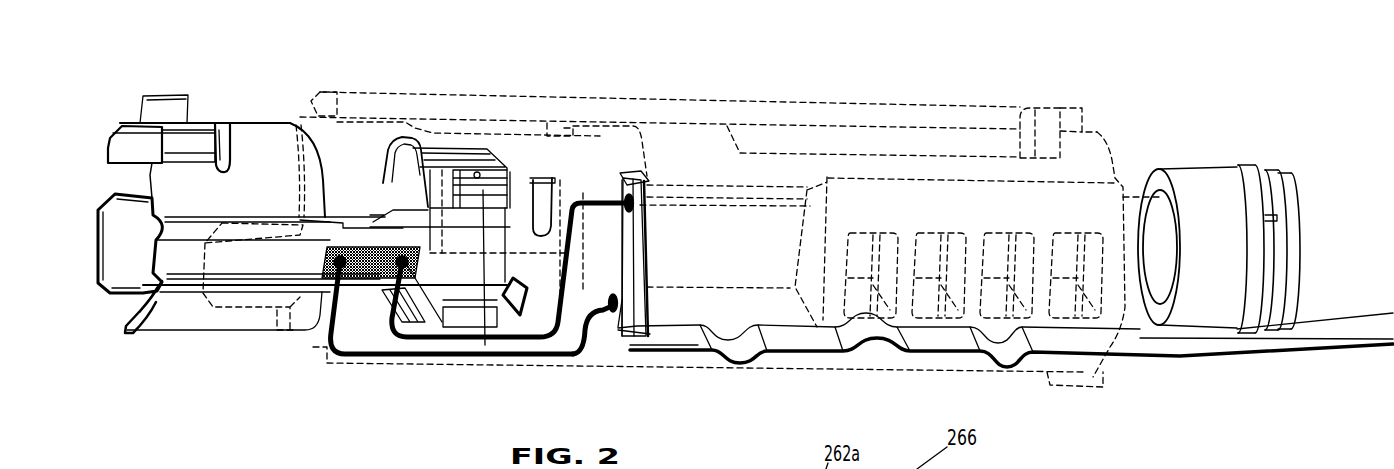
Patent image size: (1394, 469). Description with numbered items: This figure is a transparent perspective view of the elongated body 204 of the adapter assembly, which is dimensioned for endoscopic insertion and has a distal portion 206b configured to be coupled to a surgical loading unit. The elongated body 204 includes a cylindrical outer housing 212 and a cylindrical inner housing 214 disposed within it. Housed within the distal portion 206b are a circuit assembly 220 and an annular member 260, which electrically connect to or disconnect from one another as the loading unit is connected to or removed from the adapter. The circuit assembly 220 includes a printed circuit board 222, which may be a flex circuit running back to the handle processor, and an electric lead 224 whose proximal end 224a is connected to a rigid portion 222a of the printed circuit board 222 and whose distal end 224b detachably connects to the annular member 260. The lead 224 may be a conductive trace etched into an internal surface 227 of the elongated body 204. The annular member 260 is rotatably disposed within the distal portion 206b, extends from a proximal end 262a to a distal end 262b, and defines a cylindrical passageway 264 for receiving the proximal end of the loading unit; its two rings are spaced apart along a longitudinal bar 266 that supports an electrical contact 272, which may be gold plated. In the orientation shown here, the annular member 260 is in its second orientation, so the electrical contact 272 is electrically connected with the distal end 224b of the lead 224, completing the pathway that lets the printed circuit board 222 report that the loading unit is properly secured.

The elongated body 204 is at (820, 83).
The distal portion 206b is at (330, 102).
The cylindrical outer housing 212 is at (663, 113).
The cylindrical inner housing 214 is at (732, 272).
The circuit assembly 220 is at (620, 169).
The printed circuit board 222 is at (1197, 360).
The rigid portion 222a is at (617, 256).
The electric lead 224 is at (385, 338).
The proximal end 224a is at (602, 320).
The distal end 224b is at (445, 355).
The internal surface 227 is at (280, 325).
The annular member 260 is at (246, 118).
The proximal end 262a is at (490, 358).
The distal end 262b is at (130, 326).
The cylindrical passageway 264 is at (120, 258).
The longitudinal bar 266 is at (177, 263).
The electrical contact 272 is at (362, 255).